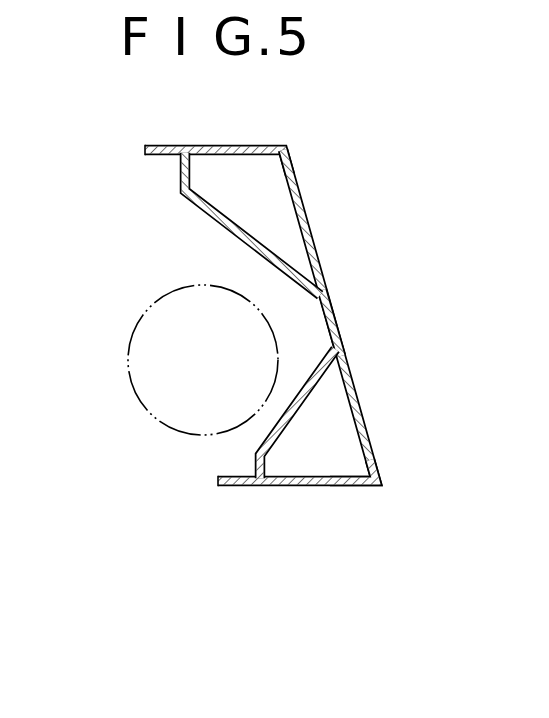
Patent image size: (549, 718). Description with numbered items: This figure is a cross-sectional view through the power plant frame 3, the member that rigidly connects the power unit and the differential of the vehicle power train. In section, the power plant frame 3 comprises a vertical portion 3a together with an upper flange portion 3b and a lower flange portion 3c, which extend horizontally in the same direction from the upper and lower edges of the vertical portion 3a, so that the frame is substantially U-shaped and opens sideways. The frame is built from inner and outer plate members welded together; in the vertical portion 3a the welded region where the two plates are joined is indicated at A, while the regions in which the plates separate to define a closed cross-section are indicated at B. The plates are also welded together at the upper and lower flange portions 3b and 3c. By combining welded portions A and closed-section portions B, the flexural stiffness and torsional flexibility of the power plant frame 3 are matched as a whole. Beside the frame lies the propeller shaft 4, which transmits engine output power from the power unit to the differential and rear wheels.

The power plant frame 3 is at (282, 322).
The vertical portion 3a is at (356, 391).
The upper flange portion 3b is at (159, 145).
The lower flange portion 3c is at (238, 488).
The welded portion A is at (338, 318).
The closed cross-section portion B is at (273, 208).
The propeller shaft 4 is at (135, 387).